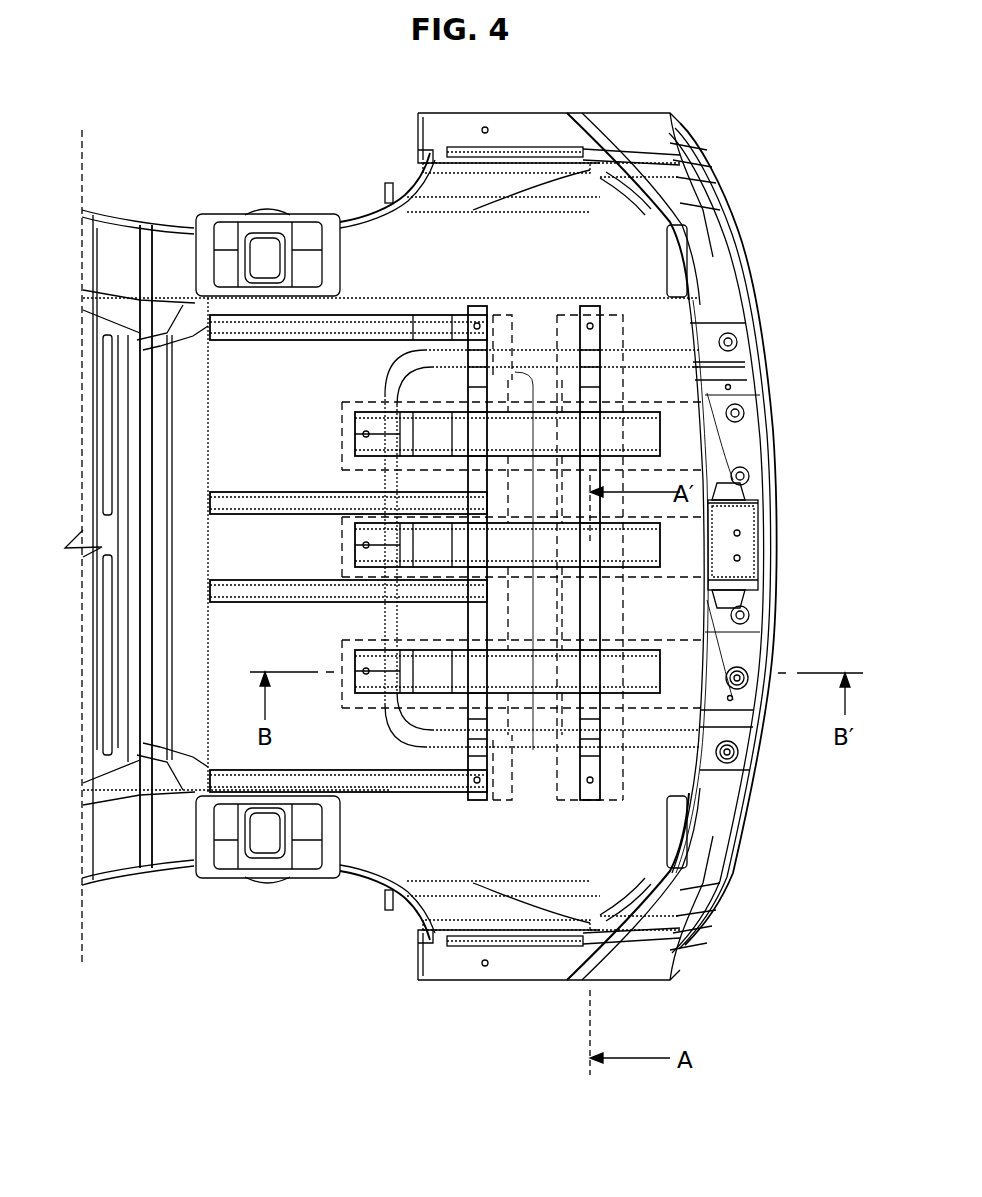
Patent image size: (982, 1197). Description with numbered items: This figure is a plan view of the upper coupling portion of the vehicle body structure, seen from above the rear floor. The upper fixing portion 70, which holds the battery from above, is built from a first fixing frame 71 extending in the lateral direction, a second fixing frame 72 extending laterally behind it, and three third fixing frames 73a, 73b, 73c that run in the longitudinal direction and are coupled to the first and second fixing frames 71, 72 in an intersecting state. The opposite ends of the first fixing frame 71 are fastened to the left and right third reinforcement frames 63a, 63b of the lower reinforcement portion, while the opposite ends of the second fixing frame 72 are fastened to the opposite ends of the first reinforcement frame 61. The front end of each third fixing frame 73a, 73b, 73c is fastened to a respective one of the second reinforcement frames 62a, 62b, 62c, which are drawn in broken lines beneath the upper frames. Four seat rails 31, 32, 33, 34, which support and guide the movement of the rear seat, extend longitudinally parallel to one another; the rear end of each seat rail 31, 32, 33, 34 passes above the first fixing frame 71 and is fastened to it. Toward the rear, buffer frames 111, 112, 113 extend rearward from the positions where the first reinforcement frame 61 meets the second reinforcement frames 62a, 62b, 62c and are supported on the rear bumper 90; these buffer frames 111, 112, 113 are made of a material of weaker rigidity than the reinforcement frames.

The seat rail 31 is at (236, 775).
The seat rail 32 is at (236, 595).
The seat rail 33 is at (236, 500).
The seat rail 34 is at (236, 332).
The first reinforcement frame 61 is at (622, 800).
The second reinforcement frame 62a is at (365, 708).
The second reinforcement frame 62b is at (342, 560).
The second reinforcement frame 62c is at (342, 450).
The third reinforcement frame 63a is at (508, 800).
The third reinforcement frame 63b is at (508, 305).
The upper fixing portion 70 is at (607, 402).
The first fixing frame 71 is at (477, 306).
The second fixing frame 72 is at (590, 306).
The third fixing frame 73a is at (355, 650).
The third fixing frame 73b is at (355, 535).
The third fixing frame 73c is at (355, 425).
The rear bumper 90 is at (770, 442).
The buffer frame 111 is at (660, 638).
The buffer frame 112 is at (670, 577).
The buffer frame 113 is at (660, 400).